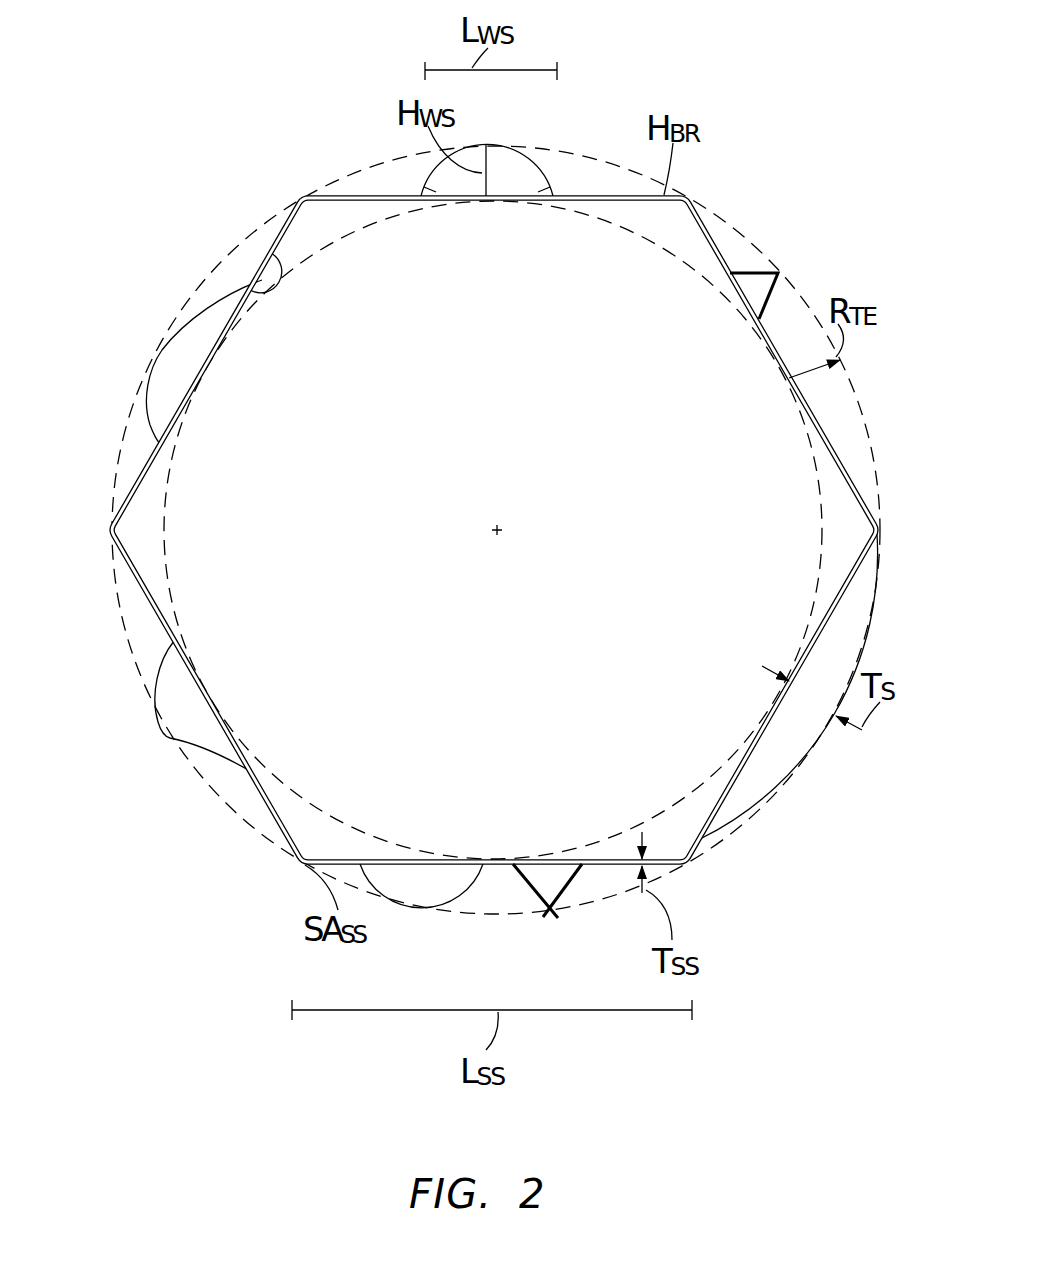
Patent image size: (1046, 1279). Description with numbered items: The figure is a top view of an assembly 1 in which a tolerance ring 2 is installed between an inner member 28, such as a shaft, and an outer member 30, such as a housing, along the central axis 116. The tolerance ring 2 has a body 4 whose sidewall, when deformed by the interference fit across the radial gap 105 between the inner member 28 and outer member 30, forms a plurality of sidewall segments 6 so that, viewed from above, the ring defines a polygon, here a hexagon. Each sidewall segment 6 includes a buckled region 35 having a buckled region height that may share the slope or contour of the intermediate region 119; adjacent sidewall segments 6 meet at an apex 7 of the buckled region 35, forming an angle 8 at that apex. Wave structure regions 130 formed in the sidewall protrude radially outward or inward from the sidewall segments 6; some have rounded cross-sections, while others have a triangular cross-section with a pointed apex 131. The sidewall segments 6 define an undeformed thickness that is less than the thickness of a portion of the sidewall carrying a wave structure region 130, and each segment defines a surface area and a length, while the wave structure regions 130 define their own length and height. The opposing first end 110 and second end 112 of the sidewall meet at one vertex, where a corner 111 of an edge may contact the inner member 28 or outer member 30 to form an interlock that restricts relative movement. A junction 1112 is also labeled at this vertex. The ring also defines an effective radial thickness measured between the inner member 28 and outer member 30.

The assembly 1 is at (852, 162).
The tolerance ring 2 is at (725, 257).
The body 4 is at (725, 227).
The sidewall segment 6 is at (643, 193).
The apex 7 is at (300, 866).
The angle 8 is at (312, 208).
The inner member 28 is at (810, 480).
The outer member 30 is at (863, 415).
The buckled region 35 is at (693, 198).
The radial gap 105 is at (830, 382).
The first end 110 is at (883, 528).
The corner 111 is at (882, 524).
The second end 112 is at (883, 532).
The vertex junction 1112 is at (882, 538).
The central axis 116 is at (562, 561).
The intermediate region 119 is at (135, 570).
The wave structure region 130 is at (533, 168).
The pointed apex 131 is at (779, 273).